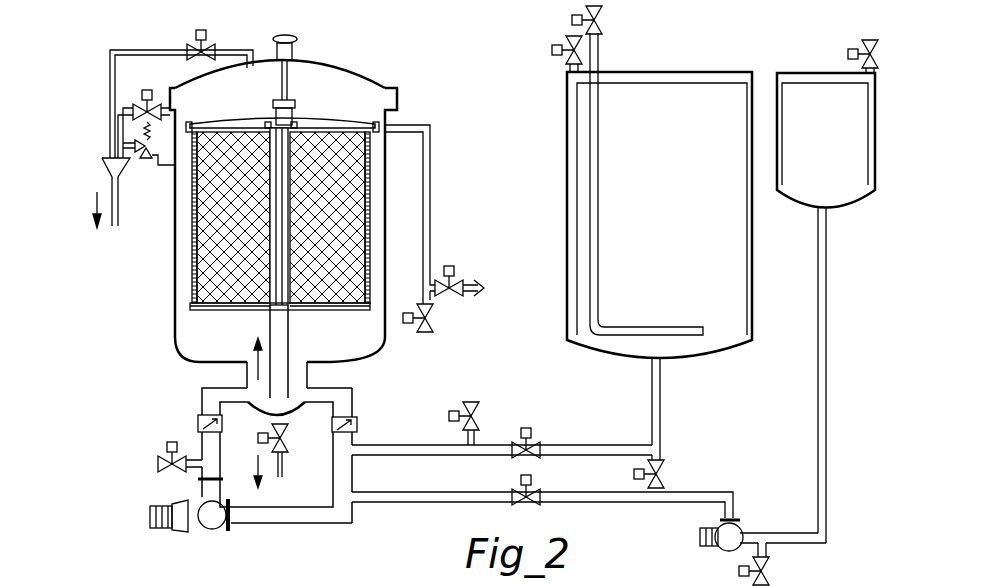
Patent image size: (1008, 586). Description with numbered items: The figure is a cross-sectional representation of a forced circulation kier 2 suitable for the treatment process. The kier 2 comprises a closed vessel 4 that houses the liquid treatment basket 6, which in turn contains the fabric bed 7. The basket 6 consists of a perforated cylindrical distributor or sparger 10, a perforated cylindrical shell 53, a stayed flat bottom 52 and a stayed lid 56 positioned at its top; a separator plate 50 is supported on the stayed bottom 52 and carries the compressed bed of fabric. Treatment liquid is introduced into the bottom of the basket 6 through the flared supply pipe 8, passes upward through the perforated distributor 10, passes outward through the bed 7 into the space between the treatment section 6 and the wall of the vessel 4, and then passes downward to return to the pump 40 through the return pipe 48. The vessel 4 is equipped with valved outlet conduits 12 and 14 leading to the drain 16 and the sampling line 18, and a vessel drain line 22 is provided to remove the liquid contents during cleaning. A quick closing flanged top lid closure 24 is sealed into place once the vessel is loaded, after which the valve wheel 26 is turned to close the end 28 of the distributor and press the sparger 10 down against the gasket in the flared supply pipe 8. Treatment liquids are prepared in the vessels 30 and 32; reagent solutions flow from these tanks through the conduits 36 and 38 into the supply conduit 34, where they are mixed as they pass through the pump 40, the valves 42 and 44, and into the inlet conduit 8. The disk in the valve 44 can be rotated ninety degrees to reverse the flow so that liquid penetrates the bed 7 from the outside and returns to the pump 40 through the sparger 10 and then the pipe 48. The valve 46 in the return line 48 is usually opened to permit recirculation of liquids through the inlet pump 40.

The kier 2 is at (345, 55).
The closed vessel 4 is at (175, 205).
The liquid treatment basket 6 is at (192, 236).
The fabric bed 7 is at (217, 260).
The supply pipe 8 is at (283, 358).
The perforated distributor 10 is at (280, 165).
The valved outlet conduit 12 is at (128, 52).
The valved outlet conduit 14 is at (122, 110).
The drain 16 is at (106, 168).
The sampling line 18 is at (447, 218).
The vessel drain line 22 is at (283, 445).
The flanged top lid closure 24 is at (378, 72).
The valve wheel 26 is at (290, 34).
The end of the distributor 28 is at (290, 106).
The treatment liquid vessel 30 is at (680, 206).
The treatment liquid vessel 32 is at (844, 164).
The supply conduit 34 is at (272, 523).
The conduit 36 is at (398, 452).
The conduit 38 is at (393, 501).
The pump 40 is at (215, 527).
The valve 42 is at (200, 418).
The valve 44 is at (284, 403).
The valve 46 is at (357, 428).
The return line 48 is at (352, 404).
The separator plate 50 is at (333, 310).
The stayed flat bottom 52 is at (238, 314).
The perforated cylindrical shell 53 is at (192, 296).
The stayed lid 56 is at (213, 126).